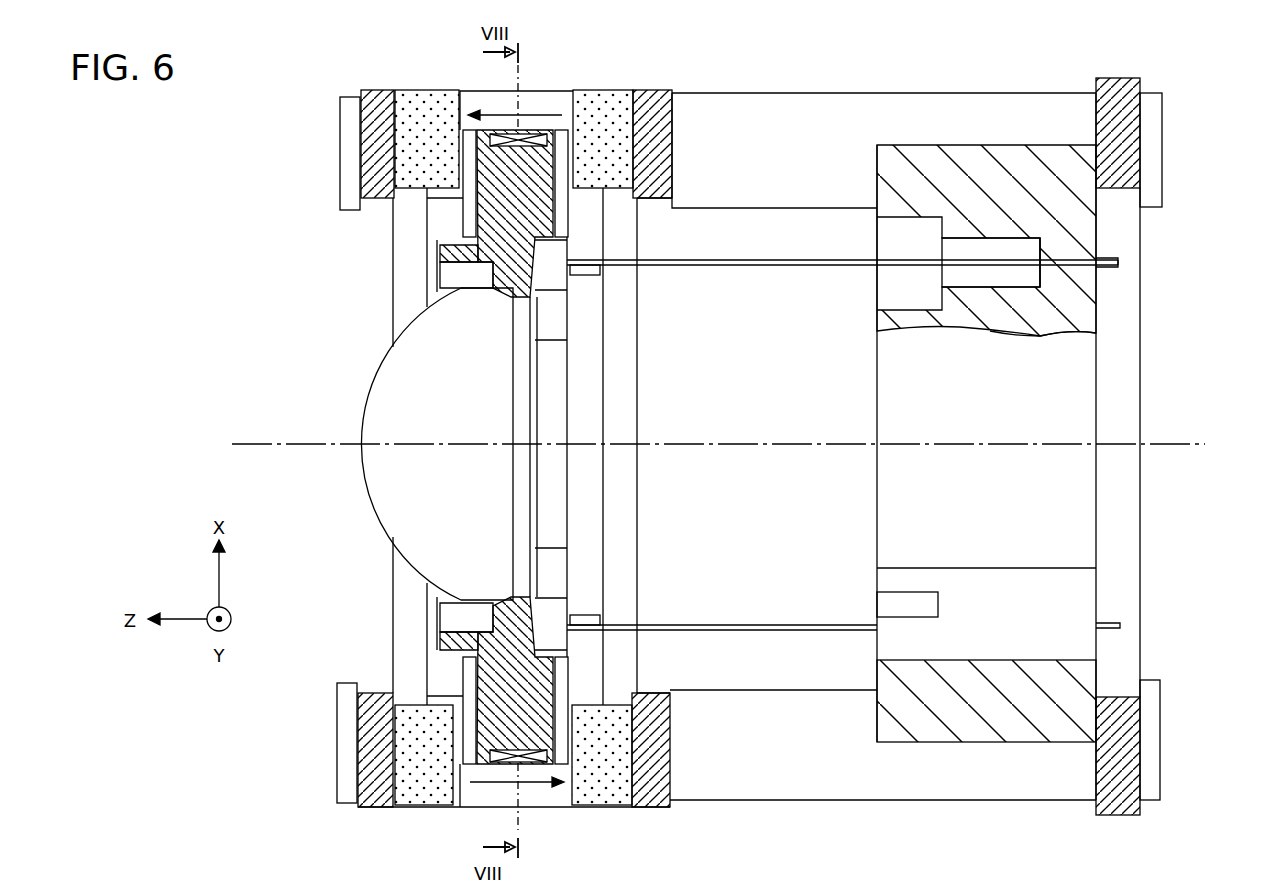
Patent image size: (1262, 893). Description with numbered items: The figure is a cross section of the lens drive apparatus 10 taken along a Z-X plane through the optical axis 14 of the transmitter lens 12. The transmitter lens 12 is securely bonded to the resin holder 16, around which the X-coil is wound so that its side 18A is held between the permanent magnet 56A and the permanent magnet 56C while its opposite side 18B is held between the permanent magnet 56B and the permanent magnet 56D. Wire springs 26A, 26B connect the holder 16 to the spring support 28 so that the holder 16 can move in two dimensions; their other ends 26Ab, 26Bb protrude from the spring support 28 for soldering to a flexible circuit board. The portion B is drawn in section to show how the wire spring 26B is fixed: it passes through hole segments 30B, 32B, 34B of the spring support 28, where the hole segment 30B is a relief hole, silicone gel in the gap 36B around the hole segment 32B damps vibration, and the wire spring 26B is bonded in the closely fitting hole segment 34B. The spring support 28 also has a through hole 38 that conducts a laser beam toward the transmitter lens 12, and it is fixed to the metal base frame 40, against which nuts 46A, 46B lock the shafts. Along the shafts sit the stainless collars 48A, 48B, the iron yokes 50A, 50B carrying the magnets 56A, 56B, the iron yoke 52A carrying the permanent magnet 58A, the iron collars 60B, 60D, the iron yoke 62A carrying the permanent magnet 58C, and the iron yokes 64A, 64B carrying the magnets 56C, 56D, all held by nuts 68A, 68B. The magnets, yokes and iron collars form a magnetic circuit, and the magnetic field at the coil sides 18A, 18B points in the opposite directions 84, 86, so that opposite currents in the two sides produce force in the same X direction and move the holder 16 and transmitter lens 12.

The lens drive apparatus 10 is at (258, 290).
The transmitter lens 12 is at (380, 470).
The optical axis 14 is at (262, 437).
The holder 16 is at (440, 255).
The side of the X-coil 18A is at (493, 767).
The side of the X-coil 18B is at (493, 137).
The wire spring 26A is at (807, 625).
The other end of the wire spring 26Ab is at (1120, 625).
The wire spring 26B is at (801, 268).
The other end of the wire spring 26Bb is at (1120, 262).
The spring support 28 is at (1018, 665).
The hole segment 30B is at (903, 165).
The hole segment 32B is at (1015, 237).
The hole segment 34B is at (1070, 336).
The gap 36B is at (963, 253).
The through hole 38 is at (1083, 480).
The base frame 40 is at (1096, 110).
The nut 46A is at (1160, 708).
The nut 46B is at (1162, 115).
The stainless collar 48A is at (940, 800).
The stainless collar 48B is at (776, 93).
The iron yoke 50A is at (660, 730).
The iron yoke 50B is at (672, 130).
The iron yoke 52A is at (628, 648).
The permanent magnet 56A is at (623, 777).
The permanent magnet 56B is at (620, 97).
The permanent magnet 56C is at (415, 796).
The permanent magnet 56D is at (410, 100).
The permanent magnet 58A is at (592, 511).
The permanent magnet 58C is at (427, 603).
The iron collar 60B is at (548, 793).
The iron collar 60D is at (560, 105).
The iron yoke 62A is at (403, 312).
The iron yoke 64A is at (365, 803).
The iron yoke 64B is at (345, 117).
The nut 68A is at (340, 700).
The nut 68B is at (350, 195).
The direction of the magnetic field 84 is at (532, 773).
The direction of the magnetic field 86 is at (535, 110).
The portion B is at (1018, 335).